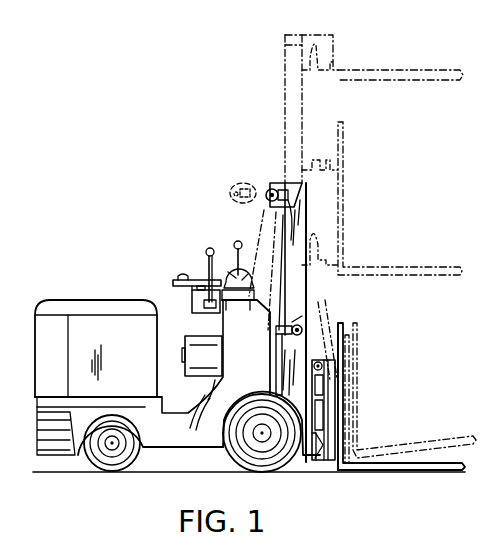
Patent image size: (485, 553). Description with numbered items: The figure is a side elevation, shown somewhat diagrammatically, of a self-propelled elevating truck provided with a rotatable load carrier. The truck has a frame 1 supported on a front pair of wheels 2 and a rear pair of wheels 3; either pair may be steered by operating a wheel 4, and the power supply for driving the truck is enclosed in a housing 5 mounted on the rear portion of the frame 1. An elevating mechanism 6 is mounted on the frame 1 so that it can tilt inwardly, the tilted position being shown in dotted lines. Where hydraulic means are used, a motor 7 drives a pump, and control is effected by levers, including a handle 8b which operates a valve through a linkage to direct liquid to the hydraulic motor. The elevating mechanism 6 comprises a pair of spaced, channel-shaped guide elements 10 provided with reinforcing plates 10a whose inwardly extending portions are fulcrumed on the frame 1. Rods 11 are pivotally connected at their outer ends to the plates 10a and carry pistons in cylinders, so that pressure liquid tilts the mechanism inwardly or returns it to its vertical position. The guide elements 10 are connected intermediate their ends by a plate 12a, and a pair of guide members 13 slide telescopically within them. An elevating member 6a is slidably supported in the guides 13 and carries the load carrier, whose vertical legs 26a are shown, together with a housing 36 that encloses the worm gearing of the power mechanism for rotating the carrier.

The frame 1 is at (178, 377).
The front pair of wheels 2 is at (235, 470).
The rear pair of wheels 3 is at (131, 470).
The wheel 4 is at (188, 278).
The housing 5 is at (46, 375).
The elevating mechanism 6 is at (397, 270).
The elevating member 6a is at (316, 462).
The motor 7 is at (192, 372).
The handle 8b is at (209, 248).
The guide elements 10 is at (300, 291).
The reinforcing plates 10a is at (278, 368).
The rods 11 is at (276, 328).
The plate 12a is at (283, 264).
The guide members 13 is at (284, 86).
The vertical legs 26a is at (344, 400).
The housing 36 is at (335, 373).